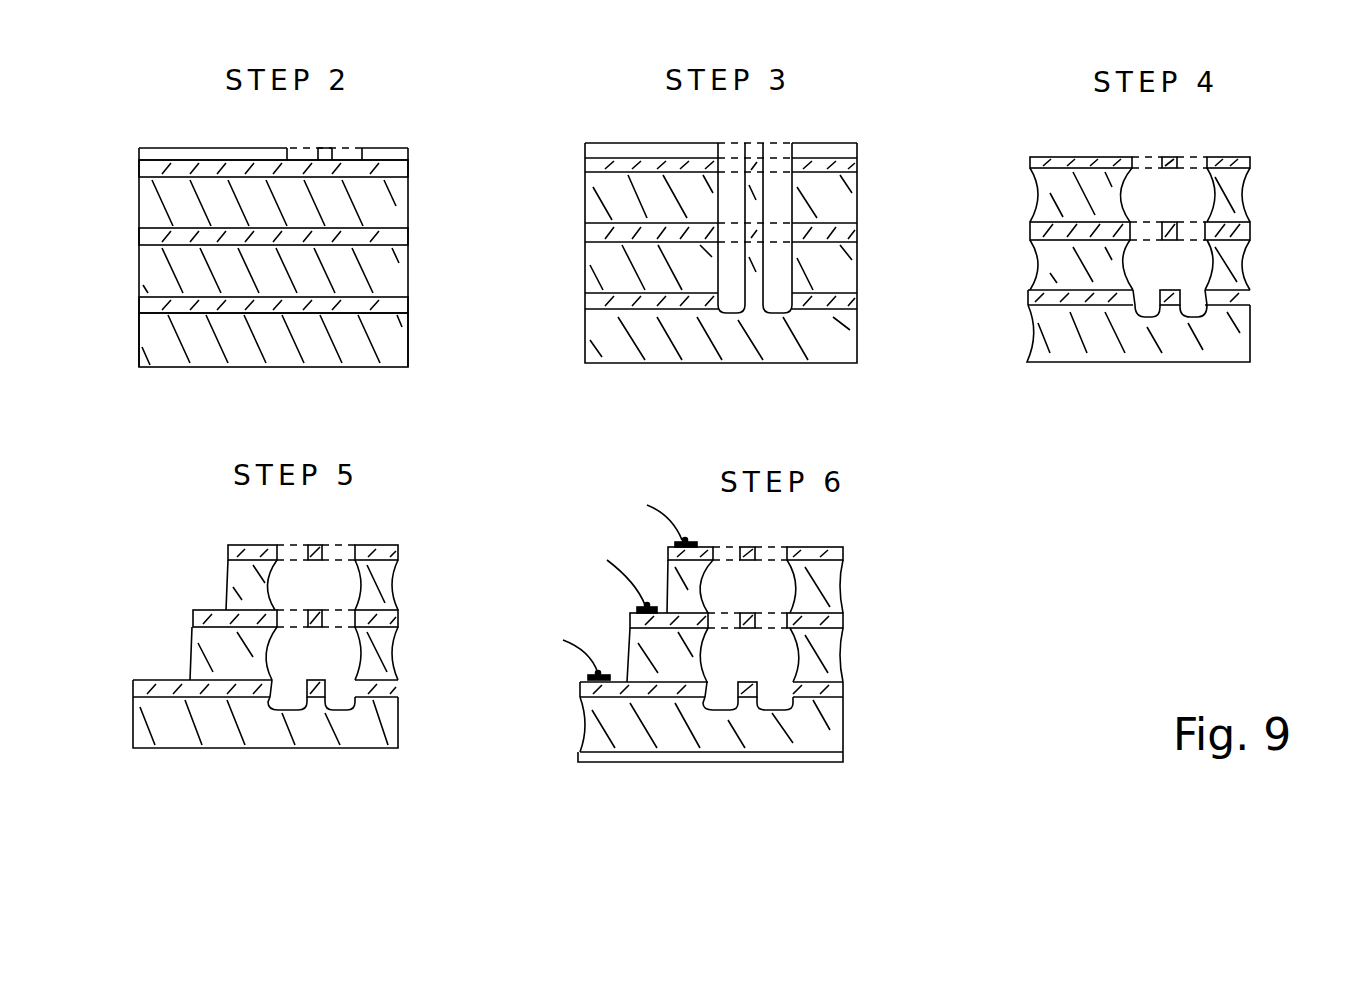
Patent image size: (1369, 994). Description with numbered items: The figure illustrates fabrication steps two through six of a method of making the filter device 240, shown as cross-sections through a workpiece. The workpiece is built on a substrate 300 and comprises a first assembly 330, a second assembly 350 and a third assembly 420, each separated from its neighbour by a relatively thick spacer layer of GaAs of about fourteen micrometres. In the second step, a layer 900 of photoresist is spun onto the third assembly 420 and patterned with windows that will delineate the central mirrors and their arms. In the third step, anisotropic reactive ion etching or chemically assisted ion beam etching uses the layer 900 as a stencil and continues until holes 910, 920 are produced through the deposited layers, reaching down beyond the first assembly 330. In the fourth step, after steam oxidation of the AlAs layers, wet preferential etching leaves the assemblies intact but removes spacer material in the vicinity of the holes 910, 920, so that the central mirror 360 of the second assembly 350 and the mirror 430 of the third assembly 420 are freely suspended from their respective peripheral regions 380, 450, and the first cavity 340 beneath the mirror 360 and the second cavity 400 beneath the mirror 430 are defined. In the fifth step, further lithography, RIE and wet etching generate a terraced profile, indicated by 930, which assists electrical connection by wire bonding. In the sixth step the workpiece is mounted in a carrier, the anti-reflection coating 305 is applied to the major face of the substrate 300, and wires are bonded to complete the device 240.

The filter device 240 is at (880, 518).
The substrate 300 is at (385, 345).
The anti-reflection coating 305 is at (783, 758).
The first assembly 330 is at (393, 300).
The first cavity 340 is at (1167, 273).
The second assembly 350 is at (395, 235).
The central mirror 360 is at (1175, 233).
The peripheral region 380 is at (1227, 227).
The second cavity 400 is at (1178, 198).
The third assembly 420 is at (393, 168).
The mirror 430 is at (1170, 153).
The peripheral region 450 is at (1230, 160).
The layer of photoresist 900 is at (387, 156).
The hole 910 is at (732, 198).
The hole 920 is at (777, 197).
The terraced profile 930 is at (385, 533).